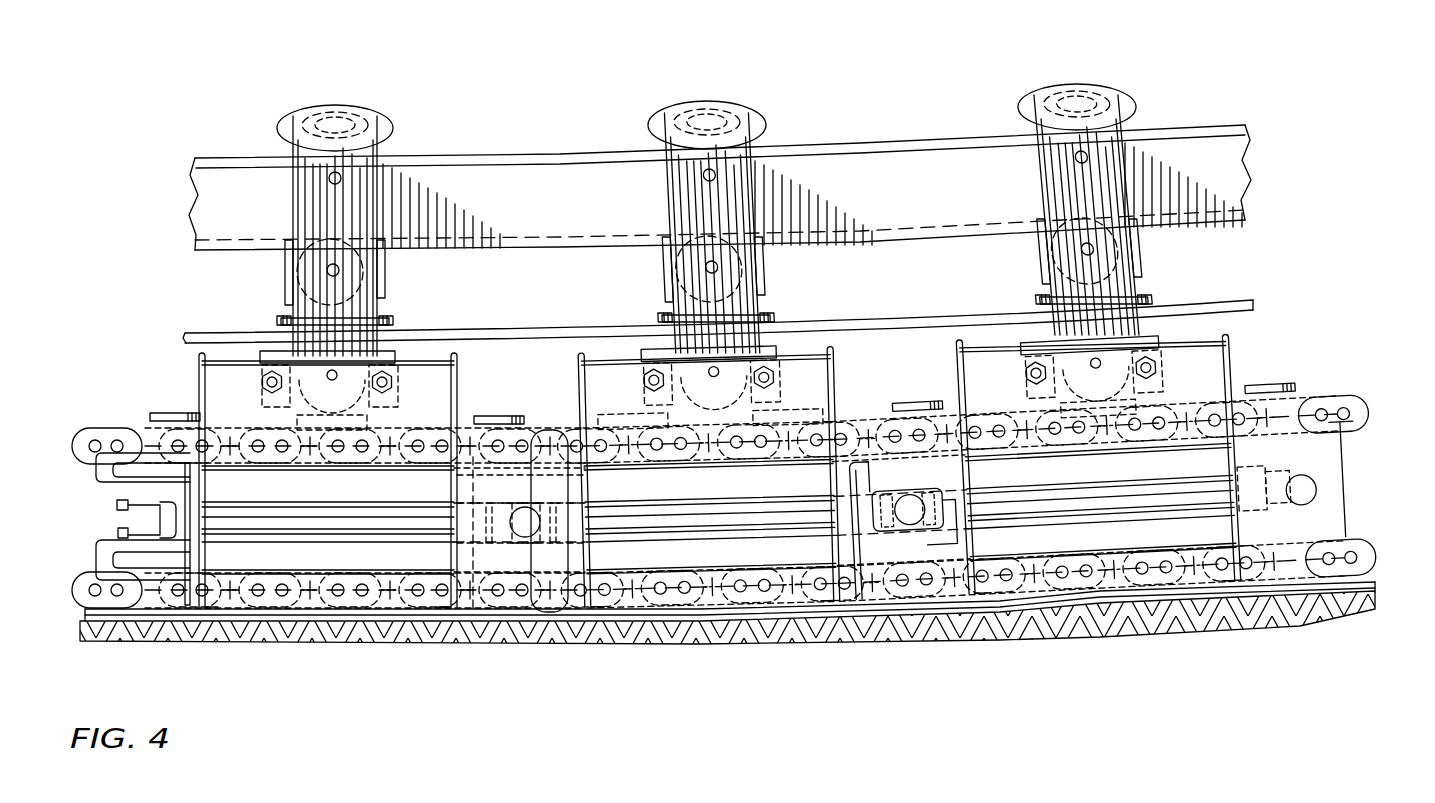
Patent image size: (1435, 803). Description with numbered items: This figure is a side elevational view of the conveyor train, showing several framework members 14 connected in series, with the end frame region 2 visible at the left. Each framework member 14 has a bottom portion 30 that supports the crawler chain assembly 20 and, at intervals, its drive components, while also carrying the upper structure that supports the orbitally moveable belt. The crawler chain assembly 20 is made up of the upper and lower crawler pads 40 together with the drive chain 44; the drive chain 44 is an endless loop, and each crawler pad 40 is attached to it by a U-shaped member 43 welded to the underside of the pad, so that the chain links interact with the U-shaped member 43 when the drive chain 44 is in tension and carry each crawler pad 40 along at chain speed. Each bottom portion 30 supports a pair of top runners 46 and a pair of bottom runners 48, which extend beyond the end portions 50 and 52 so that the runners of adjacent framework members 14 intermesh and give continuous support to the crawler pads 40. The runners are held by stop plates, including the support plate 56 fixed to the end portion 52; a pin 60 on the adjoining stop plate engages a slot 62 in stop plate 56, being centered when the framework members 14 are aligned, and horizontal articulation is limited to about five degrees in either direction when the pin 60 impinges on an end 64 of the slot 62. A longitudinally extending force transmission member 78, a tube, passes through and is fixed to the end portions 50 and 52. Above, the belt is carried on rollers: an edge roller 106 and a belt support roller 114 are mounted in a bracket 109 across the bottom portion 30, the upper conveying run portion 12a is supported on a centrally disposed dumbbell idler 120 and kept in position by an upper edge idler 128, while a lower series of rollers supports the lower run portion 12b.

The end frame 2 is at (100, 536).
The upper conveying run portion 12a is at (497, 158).
The lower run portion 12b is at (837, 326).
The framework member 14 is at (358, 192).
The crawler chain assembly 20 is at (1378, 556).
The bottom portion 30 is at (445, 608).
The crawler pad 40 is at (540, 630).
The U-shaped member 43 is at (757, 575).
The drive chain 44 is at (1368, 402).
The top runner 46 is at (93, 427).
The bottom runner 48 is at (130, 628).
The end portion 50 is at (200, 374).
The end portion 52 is at (458, 398).
The stop plate 56 is at (1318, 460).
The pin 60 is at (897, 535).
The slot 62 is at (905, 540).
The end of the slot 64 is at (932, 560).
The force transmission member 78 is at (367, 523).
The edge roller 106 is at (368, 320).
The bracket 109 is at (390, 336).
The belt support roller 114 is at (262, 325).
The dumbbell idler 120 is at (318, 288).
The upper edge idler 128 is at (380, 120).